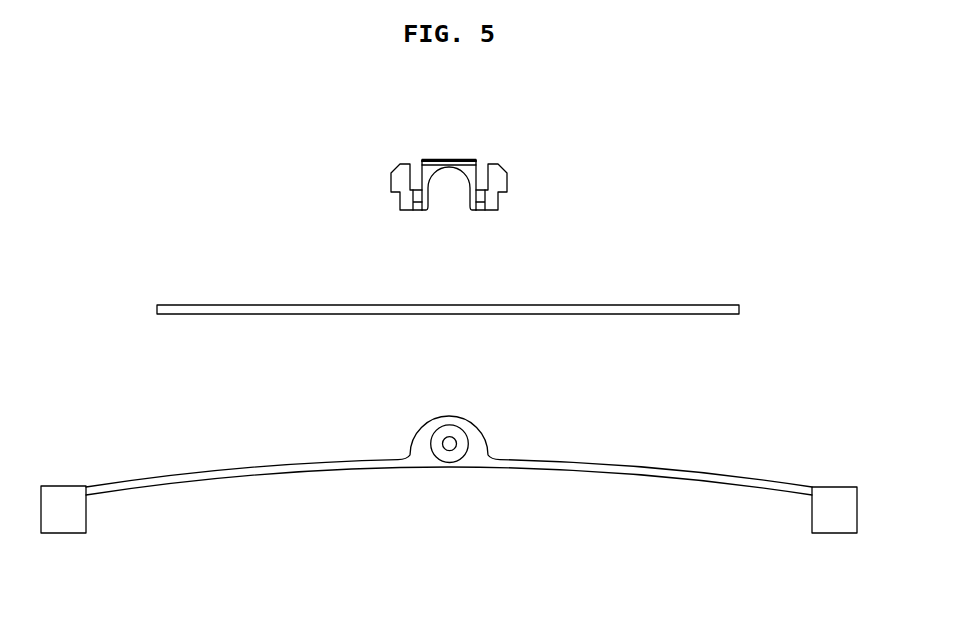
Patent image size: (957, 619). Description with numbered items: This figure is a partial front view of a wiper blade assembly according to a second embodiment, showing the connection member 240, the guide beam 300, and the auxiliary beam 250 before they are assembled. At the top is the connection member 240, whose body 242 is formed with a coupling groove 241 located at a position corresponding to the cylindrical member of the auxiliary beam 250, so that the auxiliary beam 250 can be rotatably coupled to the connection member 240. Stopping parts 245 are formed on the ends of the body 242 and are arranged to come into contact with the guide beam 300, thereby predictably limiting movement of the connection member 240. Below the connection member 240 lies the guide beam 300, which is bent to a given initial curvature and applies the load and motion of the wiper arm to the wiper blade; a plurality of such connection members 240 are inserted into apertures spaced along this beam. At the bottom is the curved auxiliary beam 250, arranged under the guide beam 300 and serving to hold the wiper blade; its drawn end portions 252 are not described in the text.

The connection member 240 is at (456, 156).
The coupling groove 241 is at (448, 192).
The body 242 is at (415, 207).
The stopping part 245 is at (390, 178).
The auxiliary beam 250 is at (630, 463).
The end block of leaf spring 252 is at (69, 522).
The guide beam 300 is at (673, 311).